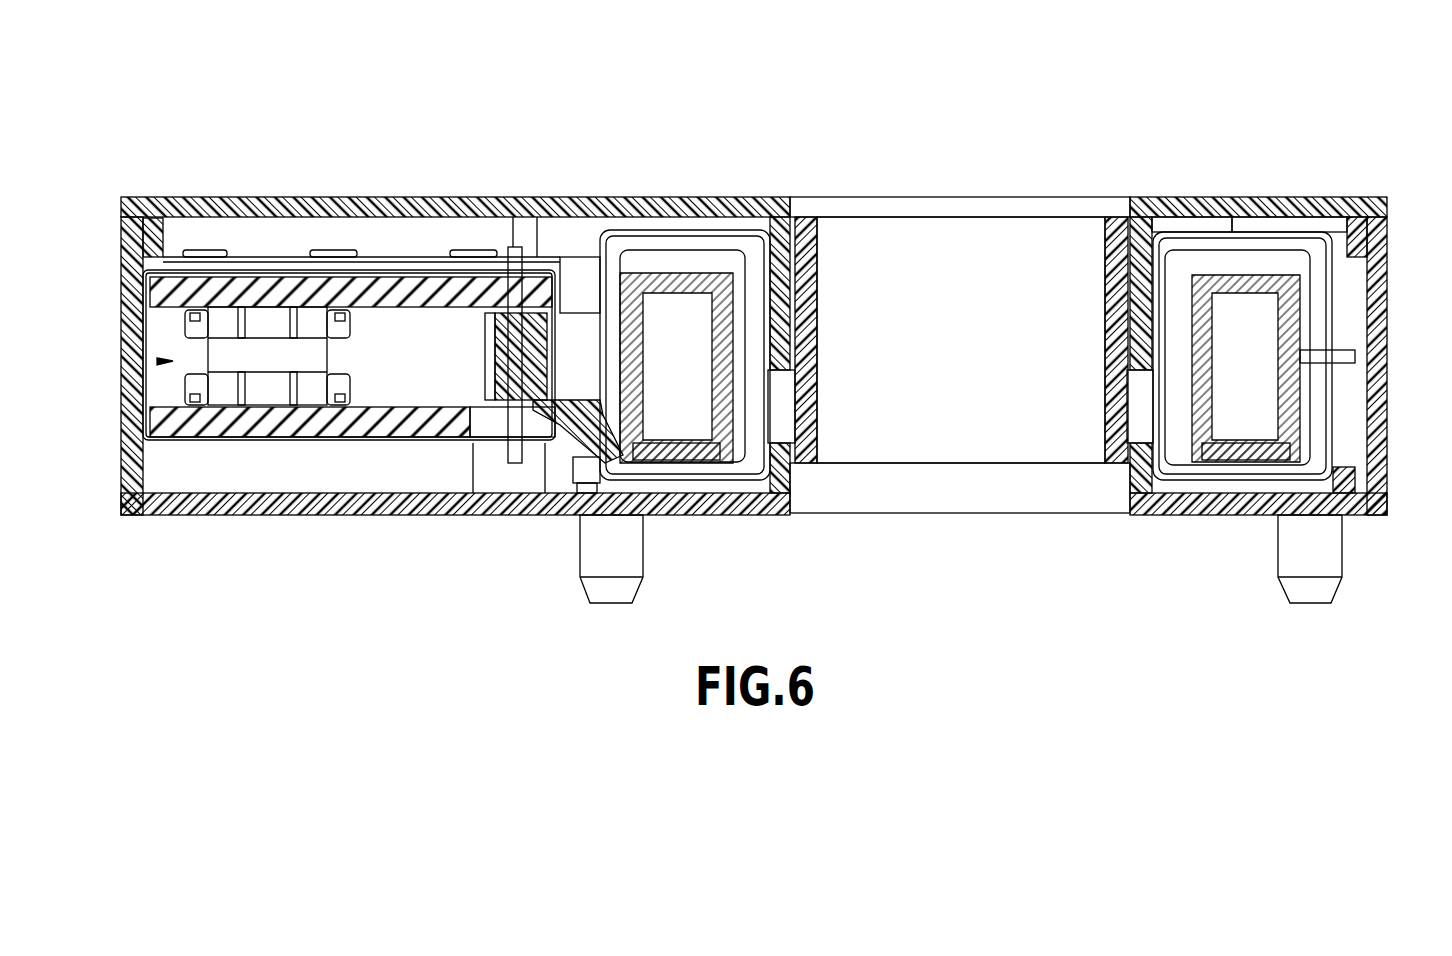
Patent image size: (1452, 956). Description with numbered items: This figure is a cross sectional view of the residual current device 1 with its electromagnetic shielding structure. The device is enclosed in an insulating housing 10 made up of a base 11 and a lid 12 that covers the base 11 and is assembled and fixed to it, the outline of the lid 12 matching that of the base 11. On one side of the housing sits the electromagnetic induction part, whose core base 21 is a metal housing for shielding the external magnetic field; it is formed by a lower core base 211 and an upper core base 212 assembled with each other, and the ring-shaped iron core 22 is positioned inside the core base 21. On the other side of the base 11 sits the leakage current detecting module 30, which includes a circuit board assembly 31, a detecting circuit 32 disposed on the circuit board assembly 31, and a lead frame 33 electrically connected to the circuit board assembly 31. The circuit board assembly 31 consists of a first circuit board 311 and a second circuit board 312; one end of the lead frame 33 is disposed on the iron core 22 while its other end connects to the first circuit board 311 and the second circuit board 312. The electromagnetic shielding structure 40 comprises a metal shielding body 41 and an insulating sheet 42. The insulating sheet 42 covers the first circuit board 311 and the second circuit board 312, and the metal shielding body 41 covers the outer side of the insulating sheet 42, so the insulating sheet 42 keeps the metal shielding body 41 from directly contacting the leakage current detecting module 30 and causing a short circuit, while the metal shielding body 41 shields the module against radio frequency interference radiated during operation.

The residual current device 1 is at (746, 70).
The insulating housing 10 is at (85, 140).
The base 11 is at (131, 252).
The lid 12 is at (257, 205).
The core base 21 is at (1438, 140).
The lower core base 211 is at (1327, 400).
The upper core base 212 is at (1302, 223).
The iron core 22 is at (1247, 280).
The leakage current detecting module 30 is at (140, 368).
The circuit board assembly 31 is at (443, 558).
The first circuit board 311 is at (333, 423).
The second circuit board 312 is at (387, 295).
The detecting circuit 32 is at (230, 393).
The lead frame 33 is at (502, 400).
The electromagnetic shielding structure 40 is at (573, 140).
The metal shielding body 41 is at (460, 250).
The insulating sheet 42 is at (527, 282).